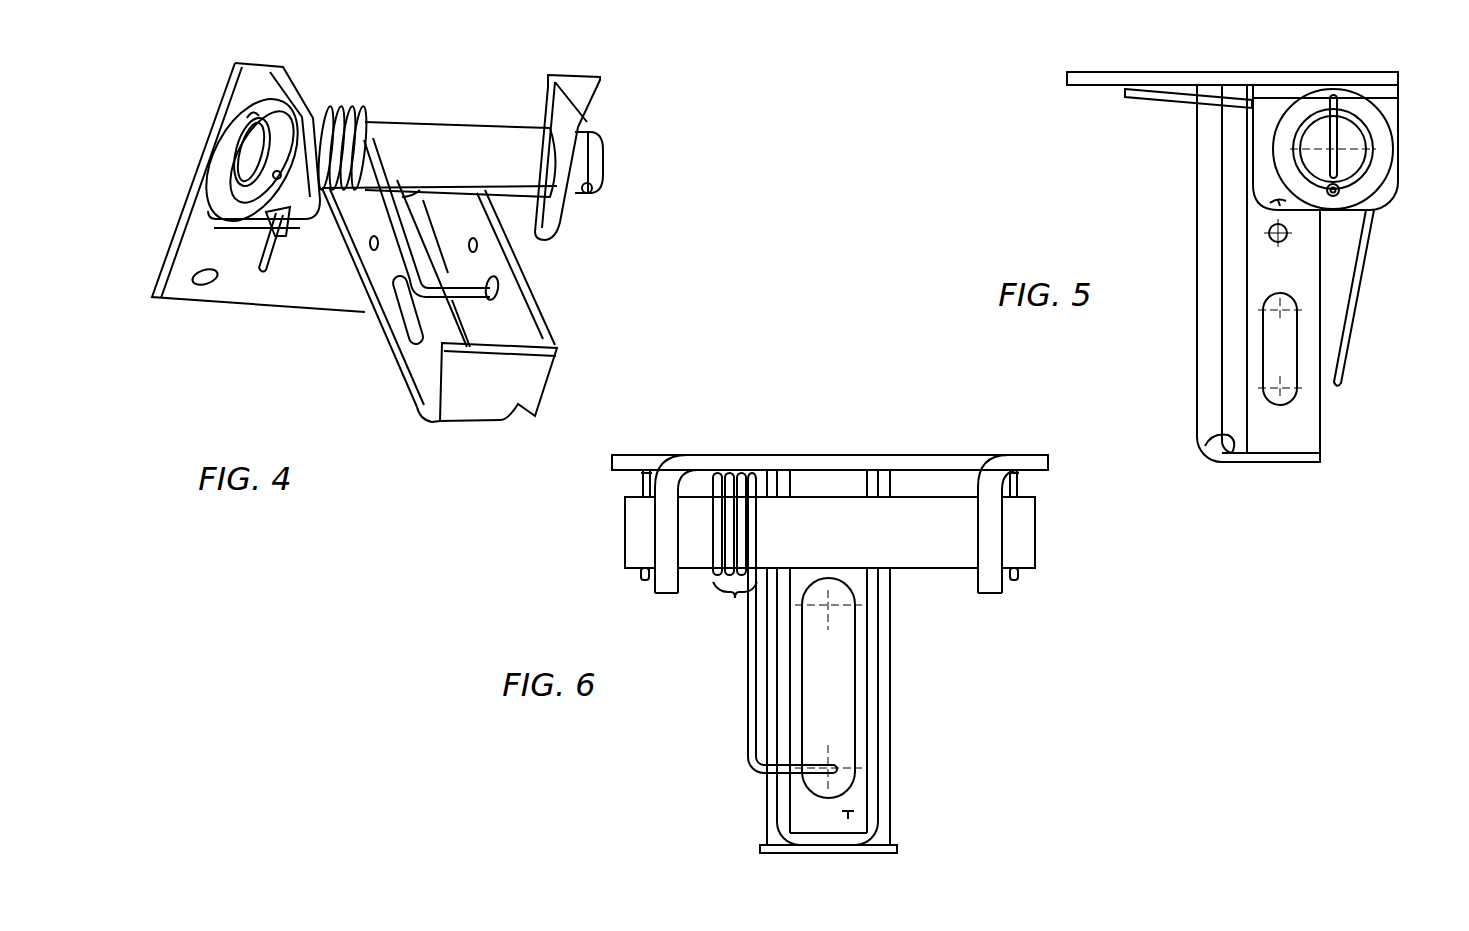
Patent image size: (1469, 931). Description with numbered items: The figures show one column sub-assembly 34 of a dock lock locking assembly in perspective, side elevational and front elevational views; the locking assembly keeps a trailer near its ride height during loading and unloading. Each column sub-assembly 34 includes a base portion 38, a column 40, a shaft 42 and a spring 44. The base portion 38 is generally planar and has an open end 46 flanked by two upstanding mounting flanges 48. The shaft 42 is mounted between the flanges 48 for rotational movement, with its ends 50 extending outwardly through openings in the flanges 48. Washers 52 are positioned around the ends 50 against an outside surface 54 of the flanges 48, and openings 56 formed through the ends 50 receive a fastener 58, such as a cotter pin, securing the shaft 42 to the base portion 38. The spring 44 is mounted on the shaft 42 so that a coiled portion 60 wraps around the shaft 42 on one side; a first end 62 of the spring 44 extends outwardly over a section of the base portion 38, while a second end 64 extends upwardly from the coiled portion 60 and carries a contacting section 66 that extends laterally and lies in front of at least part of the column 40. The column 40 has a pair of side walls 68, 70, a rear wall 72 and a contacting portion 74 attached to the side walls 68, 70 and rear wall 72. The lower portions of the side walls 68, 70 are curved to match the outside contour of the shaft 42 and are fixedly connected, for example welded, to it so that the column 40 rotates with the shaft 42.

In FIG. 4, the column sub-assembly 34 is at (405, 249).
In FIG. 5, the column sub-assembly 34 is at (1258, 270).
In FIG. 6, the column sub-assembly 34 is at (831, 654).
In FIG. 4, the base portion 38 is at (258, 288).
In FIG. 5, the base portion 38 is at (1085, 78).
In FIG. 6, the base portion 38 is at (690, 456).
In FIG. 4, the column 40 is at (445, 331).
In FIG. 5, the column 40 is at (1205, 302).
In FIG. 6, the column 40 is at (817, 693).
In FIG. 4, the shaft 42 is at (500, 135).
In FIG. 6, the shaft 42 is at (900, 572).
In FIG. 4, the spring 44 is at (386, 204).
In FIG. 5, the spring 44 is at (1390, 298).
In FIG. 6, the spring 44 is at (743, 690).
In FIG. 4, the open end 46 is at (436, 130).
In FIG. 4, the mounting flanges 48 is at (240, 265).
In FIG. 5, the mounting flanges 48 is at (1385, 190).
In FIG. 6, the mounting flanges 48 is at (665, 597).
In FIG. 4, the ends of shaft 50 is at (250, 182).
In FIG. 5, the ends of shaft 50 is at (1300, 160).
In FIG. 6, the ends of shaft 50 is at (638, 530).
In FIG. 4, the washers 52 is at (262, 155).
In FIG. 5, the washers 52 is at (1290, 180).
In FIG. 6, the washers 52 is at (648, 478).
In FIG. 4, the outside surface 54 is at (282, 215).
In FIG. 5, the outside surface 54 is at (1278, 208).
In FIG. 4, the openings 56 is at (272, 185).
In FIG. 5, the fastener 58 is at (1345, 194).
In FIG. 6, the fastener 58 is at (640, 578).
In FIG. 4, the coiled portion 60 is at (323, 106).
In FIG. 6, the coiled portion 60 is at (735, 600).
In FIG. 4, the first end 62 is at (262, 290).
In FIG. 5, the first end 62 is at (1135, 95).
In FIG. 4, the second end 64 is at (403, 253).
In FIG. 5, the second end 64 is at (1355, 335).
In FIG. 6, the second end 64 is at (748, 705).
In FIG. 4, the contacting section 66 is at (450, 285).
In FIG. 6, the contacting section 66 is at (810, 776).
In FIG. 4, the side wall 68 is at (403, 345).
In FIG. 5, the side wall 68 is at (1268, 441).
In FIG. 6, the side wall 68 is at (767, 800).
In FIG. 4, the side wall 70 is at (530, 330).
In FIG. 6, the side wall 70 is at (890, 768).
In FIG. 4, the rear wall 72 is at (427, 420).
In FIG. 6, the rear wall 72 is at (852, 818).
In FIG. 4, the contacting portion 74 is at (473, 396).
In FIG. 5, the contacting portion 74 is at (1275, 463).
In FIG. 6, the contacting portion 74 is at (826, 855).